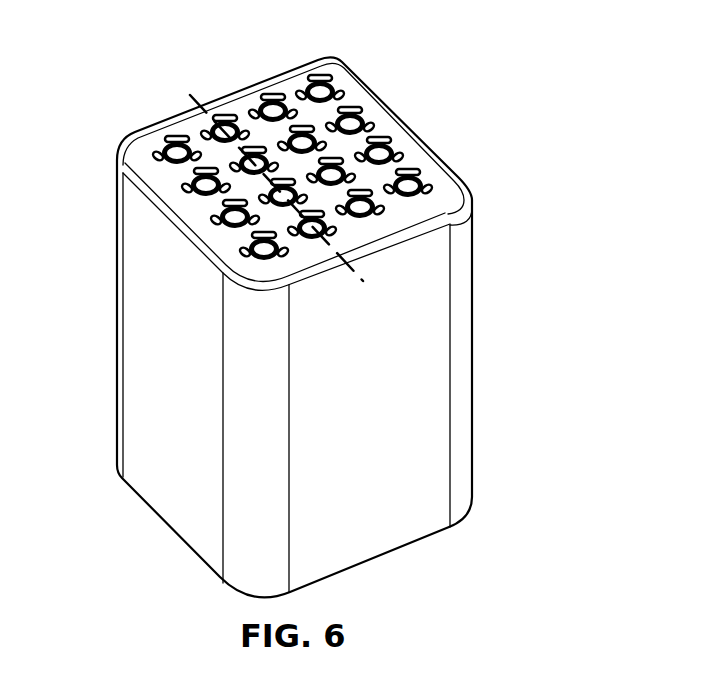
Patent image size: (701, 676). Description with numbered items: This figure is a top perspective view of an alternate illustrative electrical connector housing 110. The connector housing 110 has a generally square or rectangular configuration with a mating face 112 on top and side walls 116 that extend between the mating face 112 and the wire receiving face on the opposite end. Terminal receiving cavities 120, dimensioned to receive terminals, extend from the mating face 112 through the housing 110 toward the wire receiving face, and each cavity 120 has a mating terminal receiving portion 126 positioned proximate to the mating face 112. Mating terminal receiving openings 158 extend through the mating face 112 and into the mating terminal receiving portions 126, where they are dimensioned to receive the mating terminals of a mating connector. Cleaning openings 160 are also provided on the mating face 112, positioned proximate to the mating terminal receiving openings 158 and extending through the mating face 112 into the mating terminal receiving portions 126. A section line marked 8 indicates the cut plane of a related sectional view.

The connector housing 110 is at (462, 75).
The mating face 112 is at (358, 92).
The side walls 116 is at (158, 307).
The terminal receiving cavities 120 is at (270, 100).
The mating terminal receiving portion 126 is at (395, 150).
The mating terminal receiving openings 158 is at (430, 193).
The cleaning openings 160 is at (333, 245).
The section line 8- 8 is at (213, 87).